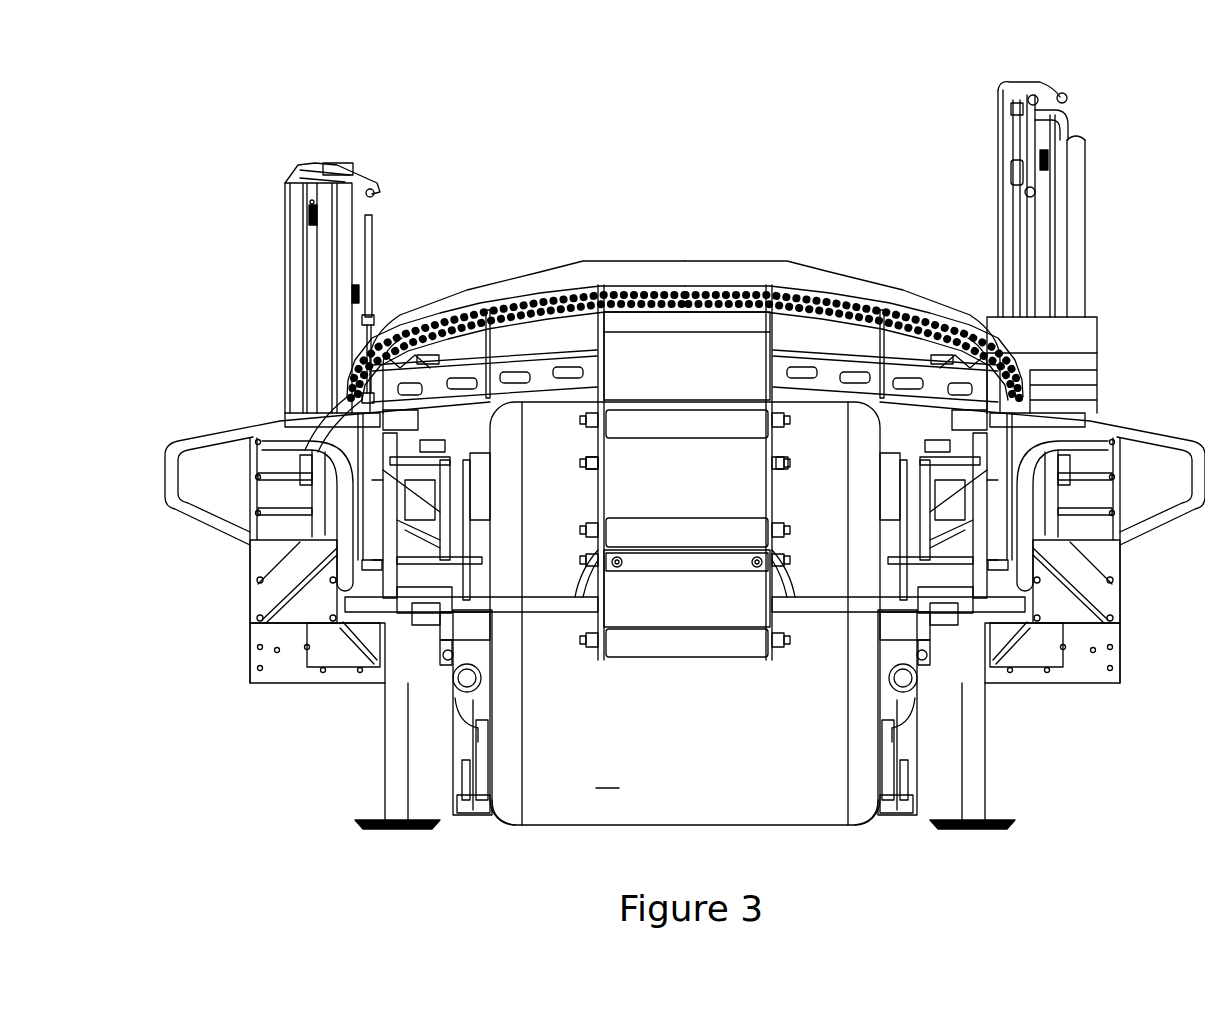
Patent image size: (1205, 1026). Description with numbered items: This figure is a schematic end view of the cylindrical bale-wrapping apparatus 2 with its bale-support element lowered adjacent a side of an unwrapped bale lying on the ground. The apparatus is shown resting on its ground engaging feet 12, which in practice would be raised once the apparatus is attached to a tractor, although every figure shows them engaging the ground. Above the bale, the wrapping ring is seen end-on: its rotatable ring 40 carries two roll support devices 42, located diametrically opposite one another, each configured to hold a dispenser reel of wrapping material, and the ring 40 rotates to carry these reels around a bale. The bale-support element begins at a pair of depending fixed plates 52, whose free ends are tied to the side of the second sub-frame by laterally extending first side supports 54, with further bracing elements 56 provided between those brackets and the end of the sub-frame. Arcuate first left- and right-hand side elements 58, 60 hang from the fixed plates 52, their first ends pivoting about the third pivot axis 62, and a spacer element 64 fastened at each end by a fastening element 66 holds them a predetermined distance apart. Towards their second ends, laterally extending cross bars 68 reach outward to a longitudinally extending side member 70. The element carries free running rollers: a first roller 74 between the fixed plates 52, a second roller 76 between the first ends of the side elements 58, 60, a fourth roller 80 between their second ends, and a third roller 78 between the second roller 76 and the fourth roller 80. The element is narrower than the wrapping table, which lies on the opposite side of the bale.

The bale-wrapping apparatus 2 is at (685, 419).
The ground engaging feet 12 is at (398, 748).
The ring 40 is at (320, 392).
The roll support device 42 is at (340, 165).
The fixed plates 52 is at (810, 330).
The first side supports 54 is at (485, 395).
The bracing elements 56 is at (492, 345).
The first left-hand side element 58 is at (598, 512).
The first right-hand side element 60 is at (773, 512).
The third pivot axis 62 is at (766, 463).
The spacer element 64 is at (704, 562).
The fastening element 66 is at (778, 565).
The cross bars 68 is at (545, 606).
The longitudinally extending side member 70 is at (490, 628).
The first roller 74 is at (688, 325).
The second roller 76 is at (682, 425).
The third roller 78 is at (664, 545).
The fourth roller 80 is at (715, 648).